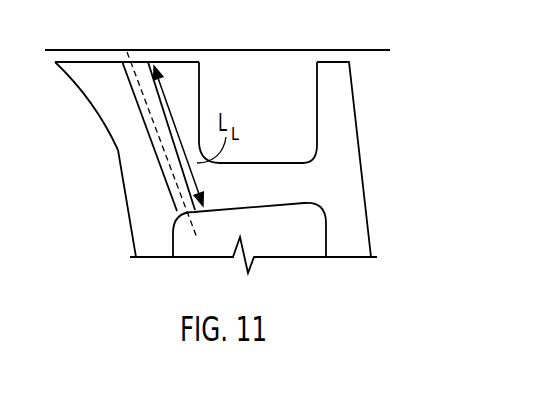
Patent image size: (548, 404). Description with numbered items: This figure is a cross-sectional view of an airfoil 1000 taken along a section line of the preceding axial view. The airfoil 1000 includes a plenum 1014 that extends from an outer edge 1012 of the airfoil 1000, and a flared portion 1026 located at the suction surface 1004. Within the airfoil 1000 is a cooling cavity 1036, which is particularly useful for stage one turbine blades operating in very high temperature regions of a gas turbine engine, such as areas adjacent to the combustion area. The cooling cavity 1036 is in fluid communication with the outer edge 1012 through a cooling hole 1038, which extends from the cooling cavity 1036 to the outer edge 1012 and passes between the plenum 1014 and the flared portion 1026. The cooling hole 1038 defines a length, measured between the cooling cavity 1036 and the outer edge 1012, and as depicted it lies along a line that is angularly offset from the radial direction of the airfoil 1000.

The airfoil 1000 is at (387, 190).
The suction surface 1004 is at (125, 188).
The outer edge 1012 is at (334, 50).
The plenum 1014 is at (260, 77).
The flared portion 1026 is at (100, 112).
The cooling cavity 1036 is at (277, 230).
The cooling hole 1038 is at (143, 68).